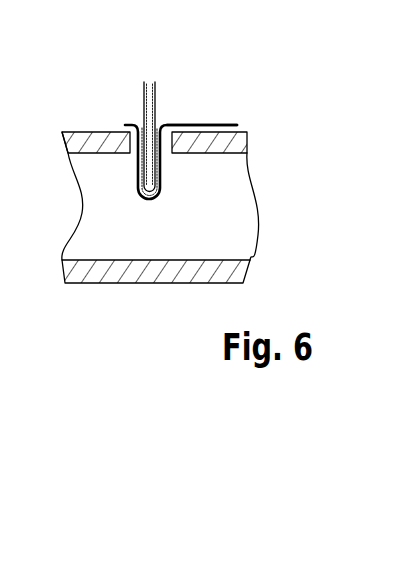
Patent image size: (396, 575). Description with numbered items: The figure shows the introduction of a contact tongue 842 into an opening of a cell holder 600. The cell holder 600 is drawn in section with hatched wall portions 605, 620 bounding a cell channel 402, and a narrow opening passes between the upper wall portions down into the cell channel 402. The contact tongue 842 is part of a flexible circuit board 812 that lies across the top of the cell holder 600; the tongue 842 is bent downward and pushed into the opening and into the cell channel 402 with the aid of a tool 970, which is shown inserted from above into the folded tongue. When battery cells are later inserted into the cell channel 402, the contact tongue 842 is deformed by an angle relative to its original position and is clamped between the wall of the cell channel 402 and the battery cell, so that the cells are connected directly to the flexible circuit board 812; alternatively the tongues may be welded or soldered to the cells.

The cell holder 600 is at (83, 118).
The contact tongue 842 is at (132, 124).
The tool 970 is at (151, 88).
The flexible circuit board 812 is at (232, 121).
The plate 605 is at (167, 143).
The base plate 620 is at (77, 268).
The cell channel 402 is at (152, 230).